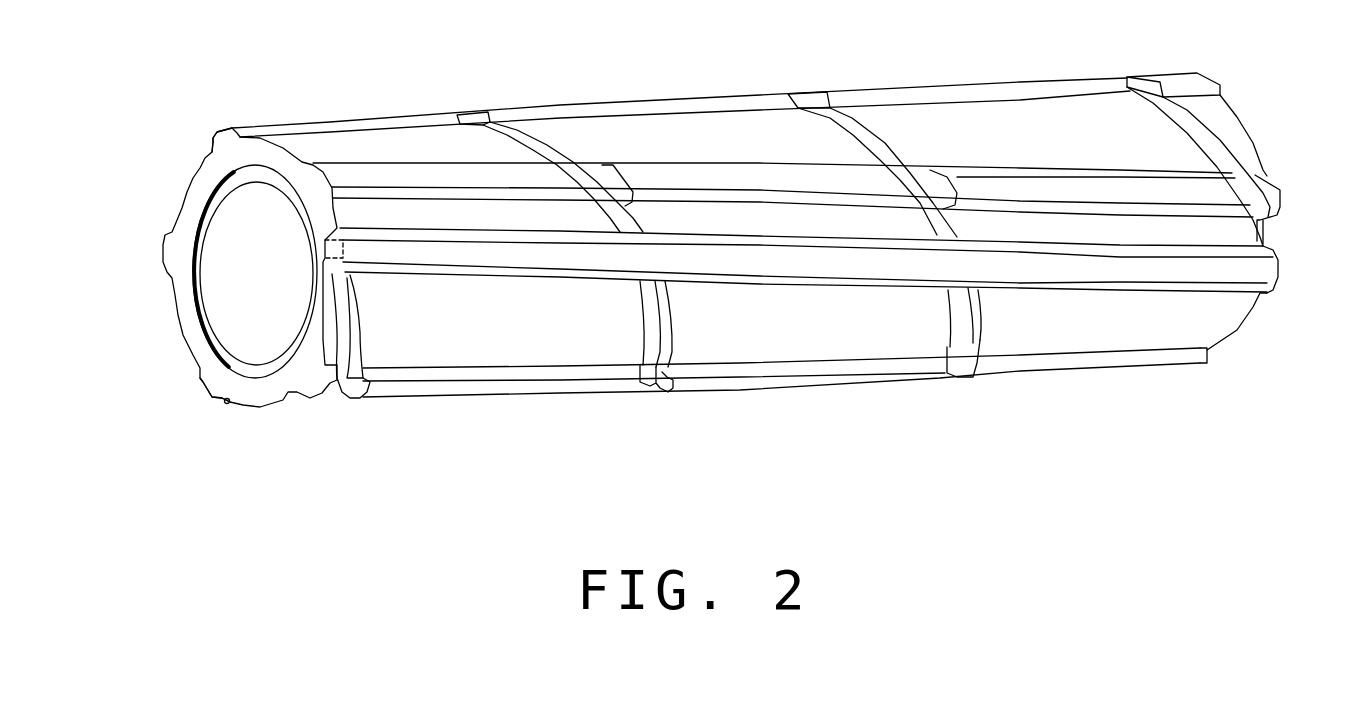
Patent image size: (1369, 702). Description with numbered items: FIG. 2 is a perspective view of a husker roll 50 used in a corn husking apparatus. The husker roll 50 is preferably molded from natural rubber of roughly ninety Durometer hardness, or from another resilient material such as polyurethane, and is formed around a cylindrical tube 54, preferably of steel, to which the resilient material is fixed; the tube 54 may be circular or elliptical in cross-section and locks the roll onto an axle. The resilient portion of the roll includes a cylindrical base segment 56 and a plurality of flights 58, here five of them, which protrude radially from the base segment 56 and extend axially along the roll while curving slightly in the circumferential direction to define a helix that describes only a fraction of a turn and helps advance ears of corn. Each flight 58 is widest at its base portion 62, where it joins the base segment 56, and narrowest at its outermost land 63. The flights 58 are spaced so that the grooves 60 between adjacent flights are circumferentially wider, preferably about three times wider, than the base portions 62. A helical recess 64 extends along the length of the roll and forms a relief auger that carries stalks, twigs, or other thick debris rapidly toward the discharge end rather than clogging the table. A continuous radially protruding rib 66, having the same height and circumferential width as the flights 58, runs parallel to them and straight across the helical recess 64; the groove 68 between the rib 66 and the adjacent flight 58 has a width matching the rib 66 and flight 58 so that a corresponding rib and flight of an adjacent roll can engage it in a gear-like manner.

The husker roll 50 is at (353, 117).
The cylindrical tube 54 is at (225, 325).
The cylindrical base segment 56 is at (193, 198).
The flights 58 is at (227, 128).
The grooves 60 is at (428, 142).
The base portion 62 is at (228, 404).
The outermost land 63 is at (208, 397).
The helical recess 64 is at (657, 372).
The rib 66 is at (1253, 275).
The groove 68 is at (773, 227).